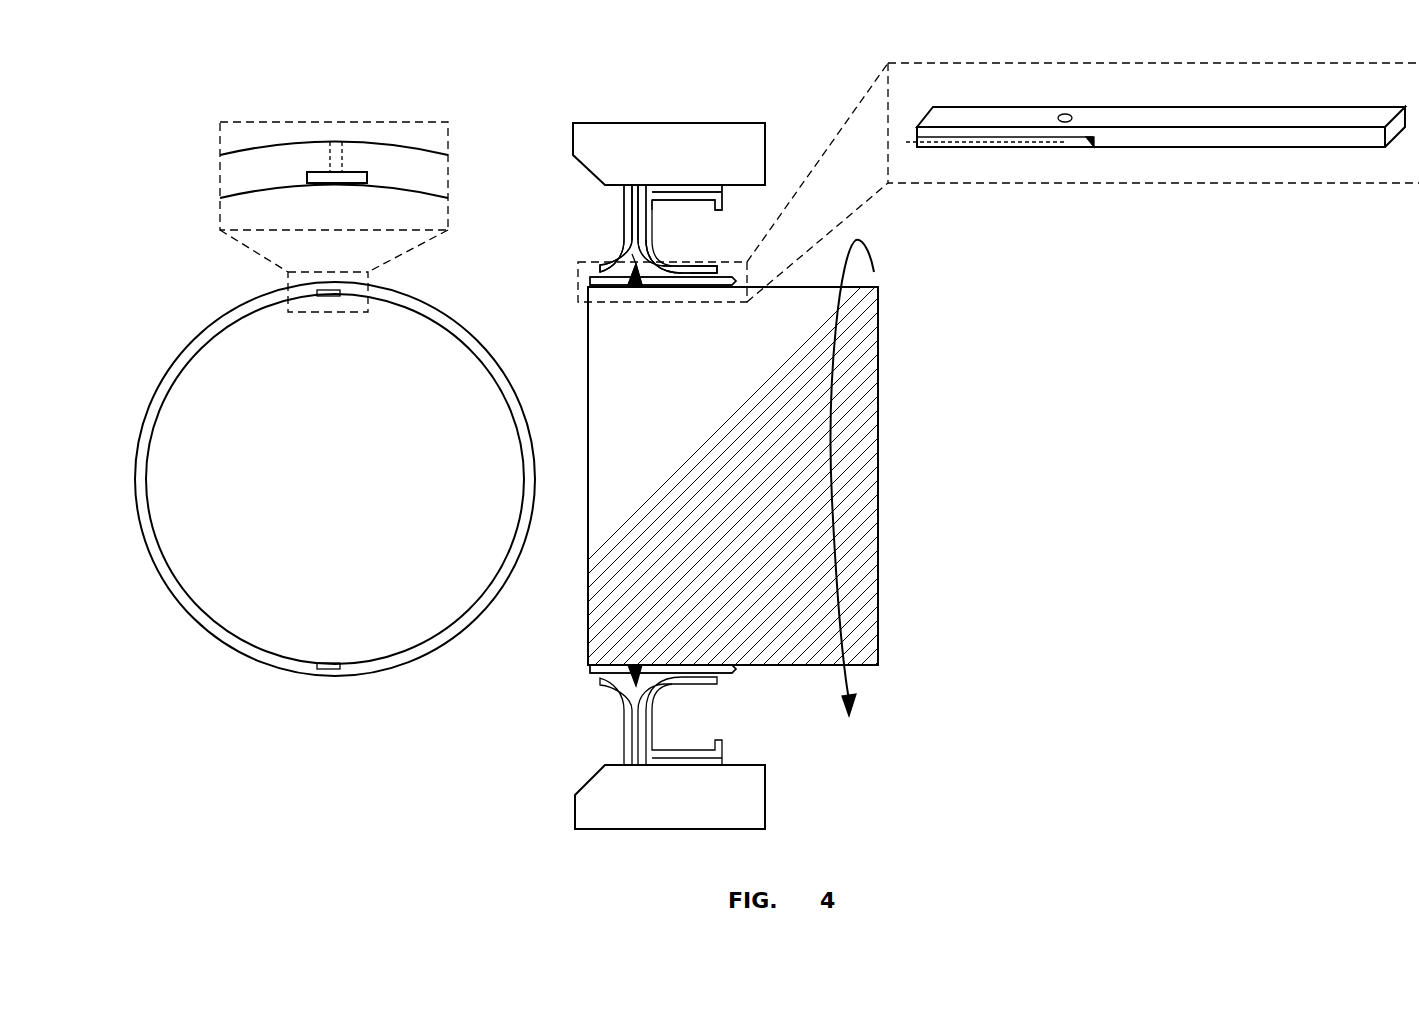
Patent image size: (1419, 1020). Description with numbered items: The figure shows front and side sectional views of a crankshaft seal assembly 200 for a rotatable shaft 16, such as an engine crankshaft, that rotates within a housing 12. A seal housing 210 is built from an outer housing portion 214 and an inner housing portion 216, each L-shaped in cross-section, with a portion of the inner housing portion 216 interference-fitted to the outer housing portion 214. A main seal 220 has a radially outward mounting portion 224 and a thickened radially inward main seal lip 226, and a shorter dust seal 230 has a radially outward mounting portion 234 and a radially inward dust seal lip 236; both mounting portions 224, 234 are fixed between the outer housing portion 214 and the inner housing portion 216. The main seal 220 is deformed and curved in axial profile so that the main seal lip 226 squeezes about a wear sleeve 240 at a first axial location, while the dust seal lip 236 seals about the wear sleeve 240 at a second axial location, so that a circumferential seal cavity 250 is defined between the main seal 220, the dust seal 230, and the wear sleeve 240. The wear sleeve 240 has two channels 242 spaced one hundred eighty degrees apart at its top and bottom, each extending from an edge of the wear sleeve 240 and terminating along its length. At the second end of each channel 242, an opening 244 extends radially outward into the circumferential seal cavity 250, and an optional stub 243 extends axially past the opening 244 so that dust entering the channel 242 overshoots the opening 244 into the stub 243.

The housing 12 is at (656, 164).
The rotatable shaft 16 is at (321, 489).
The clamp assembly 200 is at (556, 742).
The seal housing 210 is at (612, 198).
The outer housing portion 214 is at (642, 185).
The inner housing portion 216 is at (697, 196).
The main seal 220 is at (738, 270).
The radially outward mounting portion 224 is at (650, 204).
The radially inward main seal lip 226 is at (668, 255).
The dust seal 230 is at (612, 254).
The radially outward mounting portion 234 is at (652, 215).
The radially inward dust seal lip 236 is at (612, 266).
The wear sleeve 240 is at (230, 174).
The channel 242 is at (317, 172).
The stub 243 is at (1080, 147).
The opening 244 is at (336, 150).
The circumferential seal cavity 250 is at (1110, 97).